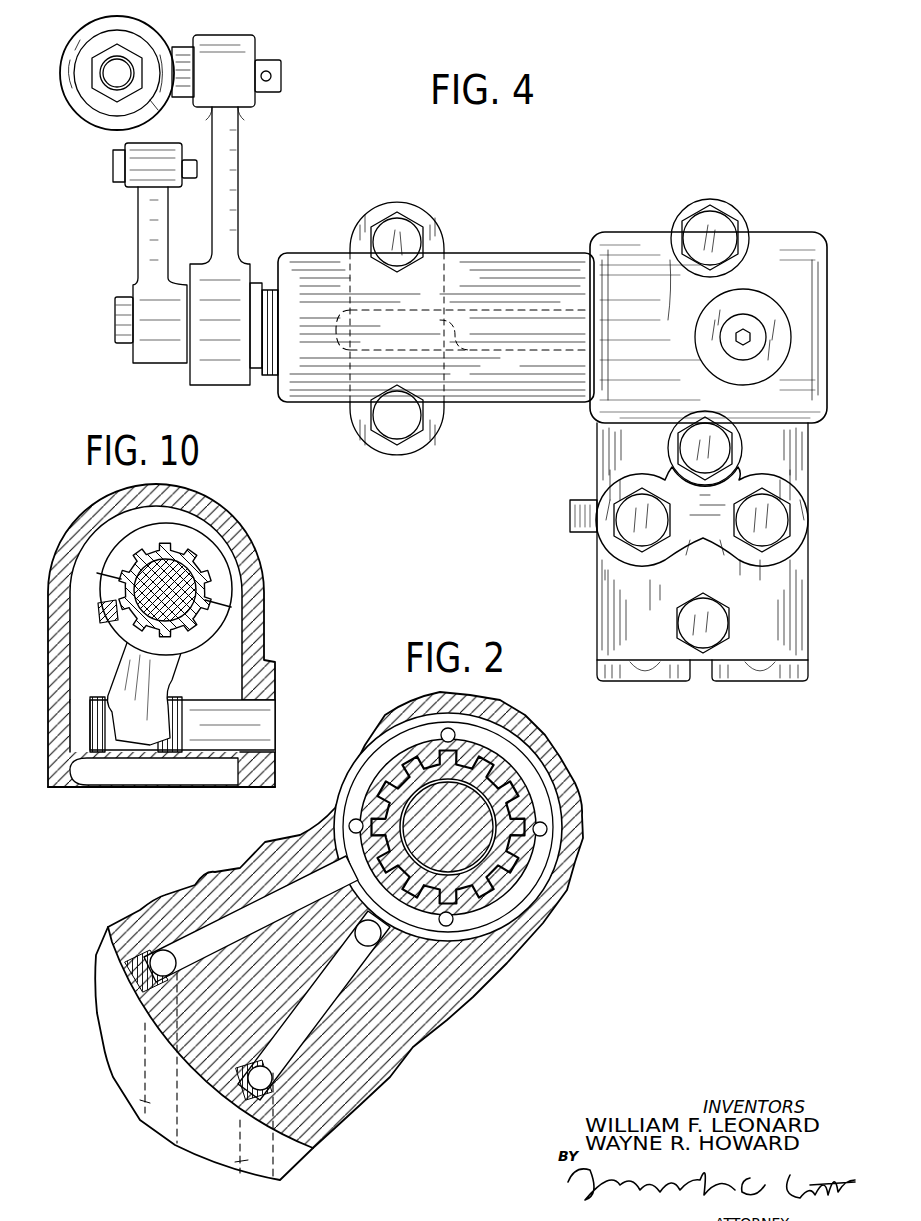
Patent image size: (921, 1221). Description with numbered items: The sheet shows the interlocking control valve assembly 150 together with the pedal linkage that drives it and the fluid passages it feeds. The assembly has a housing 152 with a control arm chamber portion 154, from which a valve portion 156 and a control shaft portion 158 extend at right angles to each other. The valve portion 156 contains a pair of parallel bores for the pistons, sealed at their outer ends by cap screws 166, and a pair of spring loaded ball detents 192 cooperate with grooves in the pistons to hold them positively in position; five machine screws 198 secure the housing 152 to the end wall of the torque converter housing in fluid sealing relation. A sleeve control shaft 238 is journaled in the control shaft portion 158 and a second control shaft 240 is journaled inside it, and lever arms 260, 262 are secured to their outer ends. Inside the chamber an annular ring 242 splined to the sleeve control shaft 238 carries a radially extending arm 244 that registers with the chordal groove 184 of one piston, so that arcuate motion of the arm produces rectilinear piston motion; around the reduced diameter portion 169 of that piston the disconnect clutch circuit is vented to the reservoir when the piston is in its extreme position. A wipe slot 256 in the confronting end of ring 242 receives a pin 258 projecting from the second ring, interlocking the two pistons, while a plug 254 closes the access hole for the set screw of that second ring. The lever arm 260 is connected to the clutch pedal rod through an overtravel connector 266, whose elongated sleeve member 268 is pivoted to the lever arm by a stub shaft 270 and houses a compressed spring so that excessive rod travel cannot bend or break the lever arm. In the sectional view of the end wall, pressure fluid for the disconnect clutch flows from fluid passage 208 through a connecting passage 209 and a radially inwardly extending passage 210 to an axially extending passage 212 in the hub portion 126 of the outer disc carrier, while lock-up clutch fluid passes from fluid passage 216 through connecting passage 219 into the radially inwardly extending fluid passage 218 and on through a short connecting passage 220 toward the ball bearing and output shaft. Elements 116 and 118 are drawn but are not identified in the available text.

In FIG. 4, the elongated sleeve member 268 is at (92, 30).
In FIG. 4, the overtravel connector 266 is at (79, 130).
In FIG. 4, the stub shaft 270 is at (185, 48).
In FIG. 4, the lever arm 260 is at (230, 157).
In FIG. 4, the lever arm 262 is at (150, 220).
In FIG. 4, the sleeve control shaft 238 is at (265, 363).
In FIG. 10, the sleeve control shaft 238 is at (205, 567).
In FIG. 4, the control shaft portion 158 is at (477, 392).
In FIG. 4, the machine screws 198 is at (403, 230).
In FIG. 4, the interlocking control valve assembly 150 is at (589, 231).
In FIG. 4, the control arm chamber portion 154 is at (816, 414).
In FIG. 4, the plug 254 is at (748, 333).
In FIG. 4, the housing 152 is at (596, 440).
In FIG. 4, the spring loaded ball detents 192 is at (753, 525).
In FIG. 4, the valve portion 156 is at (602, 607).
In FIG. 4, the cap screws 166 is at (598, 668).
In FIG. 10, the chordal groove 184 is at (110, 700).
In FIG. 10, the reduced diameter portion 169 is at (232, 734).
In FIG. 10, the radially extending arm 244 is at (162, 673).
In FIG. 10, the annular ring 242 is at (202, 548).
In FIG. 10, the wipe slot 256 is at (97, 573).
In FIG. 10, the pin 258 is at (95, 615).
In FIG. 10, the control shaft 240 is at (180, 597).
In FIG. 2, the hub portion 126 is at (540, 787).
In FIG. 2, the splined hub 118 is at (507, 867).
In FIG. 2, the shaft 116 is at (470, 825).
In FIG. 2, the axially extending passage 212 is at (548, 831).
In FIG. 2, the radially inwardly extending passage 210 is at (223, 925).
In FIG. 2, the radially inwardly extending fluid passage 218 is at (325, 995).
In FIG. 2, the connecting passage 209 is at (170, 965).
In FIG. 2, the short connecting passage 220 is at (373, 940).
In FIG. 2, the connecting passage 219 is at (270, 1079).
In FIG. 2, the fluid passage 208 is at (138, 1117).
In FIG. 2, the fluid passage 216 is at (237, 1177).